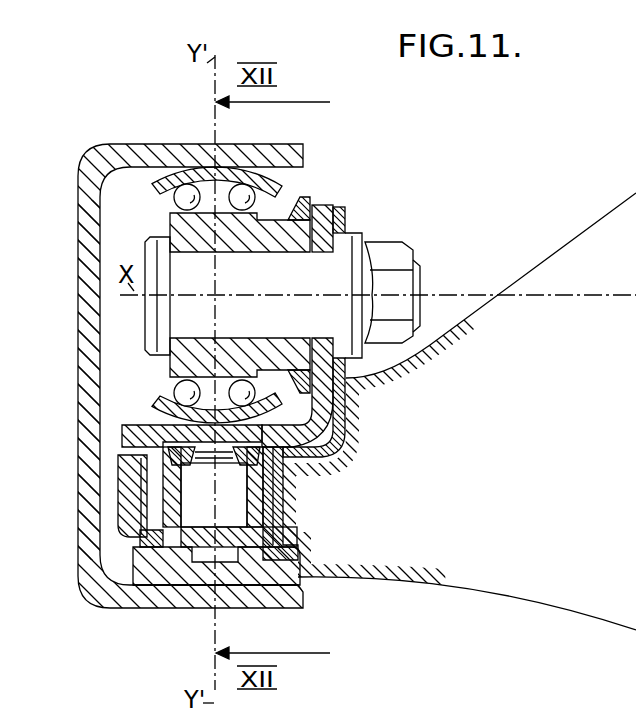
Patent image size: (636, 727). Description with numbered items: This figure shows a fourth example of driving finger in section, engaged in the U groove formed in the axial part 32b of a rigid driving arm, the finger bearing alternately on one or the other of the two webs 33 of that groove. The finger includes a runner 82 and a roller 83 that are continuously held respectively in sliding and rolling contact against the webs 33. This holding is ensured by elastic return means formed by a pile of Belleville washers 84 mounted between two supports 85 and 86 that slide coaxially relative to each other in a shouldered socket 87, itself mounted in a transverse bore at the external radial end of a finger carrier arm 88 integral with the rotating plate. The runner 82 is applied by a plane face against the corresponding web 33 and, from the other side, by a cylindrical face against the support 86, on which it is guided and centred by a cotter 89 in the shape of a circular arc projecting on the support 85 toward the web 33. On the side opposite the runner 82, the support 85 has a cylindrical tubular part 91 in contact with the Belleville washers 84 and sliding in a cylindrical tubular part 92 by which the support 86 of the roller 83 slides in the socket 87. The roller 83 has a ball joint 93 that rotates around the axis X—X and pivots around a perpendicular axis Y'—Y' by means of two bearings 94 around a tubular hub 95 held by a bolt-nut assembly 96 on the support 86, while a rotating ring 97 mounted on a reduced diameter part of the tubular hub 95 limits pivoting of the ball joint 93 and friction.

The web 33 is at (138, 157).
The axial part 32b is at (84, 358).
The roller 83 is at (247, 252).
The ball joint 93 is at (163, 178).
The bearings 94 is at (240, 191).
The tubular hub 95 is at (205, 231).
The bolt-nut assembly 96 is at (295, 282).
The rotating ring 97 is at (307, 202).
The finger carrier arm 88 is at (540, 260).
The support 86 is at (320, 410).
The shouldered socket 87 is at (344, 450).
The Belleville washers 84 is at (160, 470).
The cylindrical tubular part 92 is at (160, 508).
The cylindrical tubular part 91 is at (253, 498).
The support 85 is at (148, 543).
The cotter 89 is at (183, 583).
The runner 82 is at (273, 562).